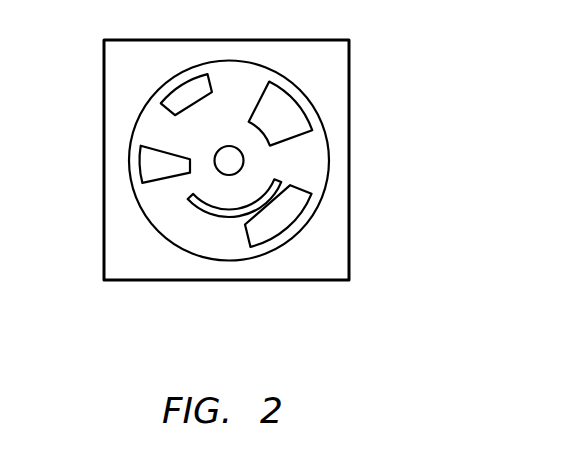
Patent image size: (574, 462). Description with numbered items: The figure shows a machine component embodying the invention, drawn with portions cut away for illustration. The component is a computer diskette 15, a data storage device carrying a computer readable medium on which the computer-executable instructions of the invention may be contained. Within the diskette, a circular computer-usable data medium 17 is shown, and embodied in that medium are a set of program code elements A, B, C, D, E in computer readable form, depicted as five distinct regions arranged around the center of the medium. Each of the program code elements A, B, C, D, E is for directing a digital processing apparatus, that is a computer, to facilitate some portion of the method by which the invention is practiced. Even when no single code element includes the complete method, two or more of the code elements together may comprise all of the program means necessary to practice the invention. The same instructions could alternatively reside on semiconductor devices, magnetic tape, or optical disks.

The computer diskette 15 is at (349, 126).
The computer-usable data medium 17 is at (315, 173).
The program code element A is at (288, 110).
The program code element B is at (185, 92).
The program code element C is at (147, 165).
The program code element D is at (216, 213).
The program code element E is at (283, 215).